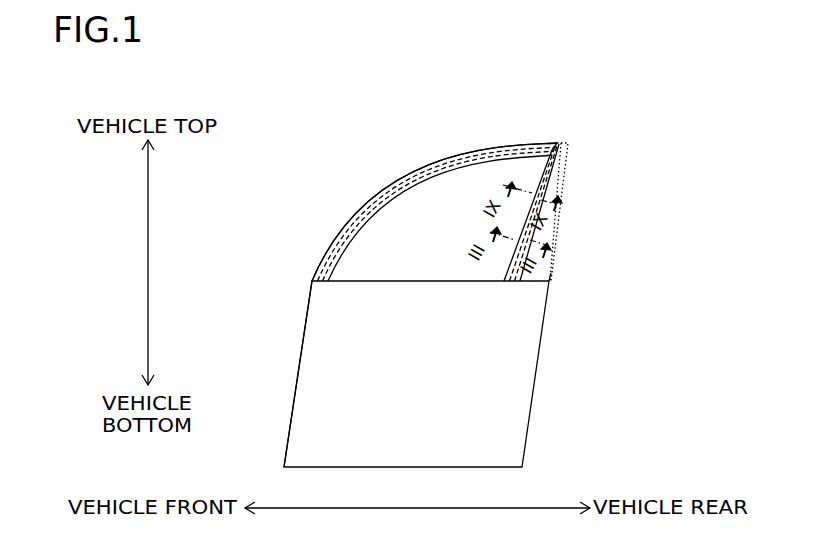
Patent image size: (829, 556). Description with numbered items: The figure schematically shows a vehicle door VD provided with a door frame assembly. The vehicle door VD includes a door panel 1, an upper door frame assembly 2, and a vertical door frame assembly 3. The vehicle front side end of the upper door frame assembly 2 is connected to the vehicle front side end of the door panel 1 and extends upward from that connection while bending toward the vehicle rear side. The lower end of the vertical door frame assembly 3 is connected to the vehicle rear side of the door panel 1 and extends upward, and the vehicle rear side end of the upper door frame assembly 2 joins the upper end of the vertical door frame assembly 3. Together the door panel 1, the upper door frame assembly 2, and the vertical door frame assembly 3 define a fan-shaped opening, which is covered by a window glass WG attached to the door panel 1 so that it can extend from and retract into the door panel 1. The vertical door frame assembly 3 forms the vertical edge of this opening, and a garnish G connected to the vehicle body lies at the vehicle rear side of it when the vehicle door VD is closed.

The door panel 1 is at (528, 378).
The upper door frame assembly 2 is at (372, 202).
The vertical door frame assembly 3 is at (549, 180).
The garnish G is at (569, 153).
The window glass WG is at (350, 259).
The vehicle door VD is at (305, 340).